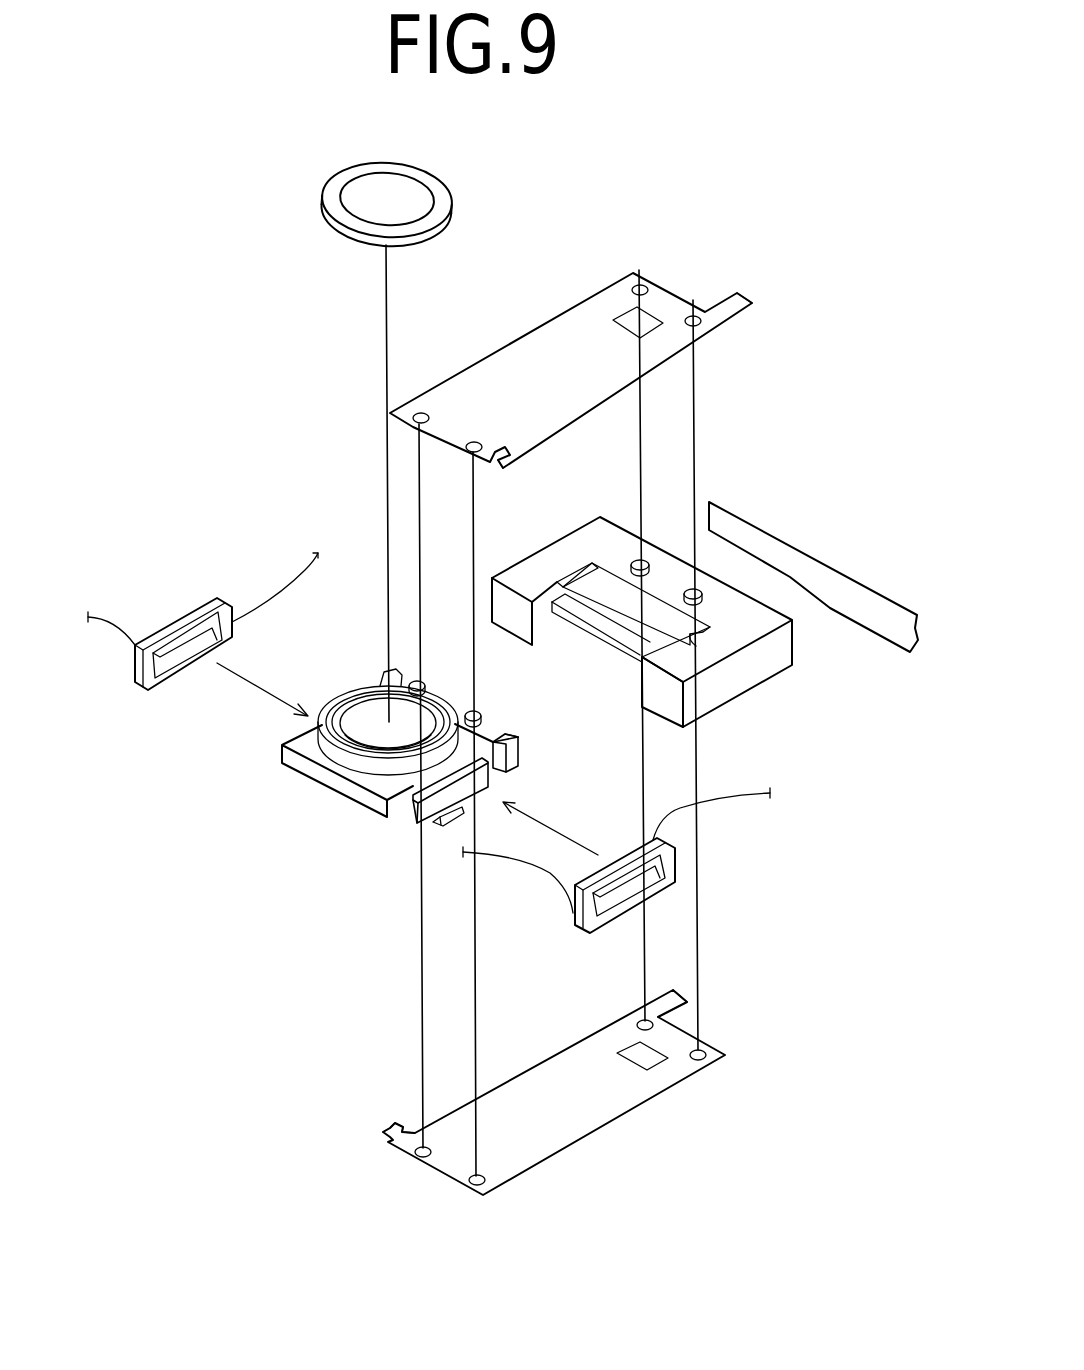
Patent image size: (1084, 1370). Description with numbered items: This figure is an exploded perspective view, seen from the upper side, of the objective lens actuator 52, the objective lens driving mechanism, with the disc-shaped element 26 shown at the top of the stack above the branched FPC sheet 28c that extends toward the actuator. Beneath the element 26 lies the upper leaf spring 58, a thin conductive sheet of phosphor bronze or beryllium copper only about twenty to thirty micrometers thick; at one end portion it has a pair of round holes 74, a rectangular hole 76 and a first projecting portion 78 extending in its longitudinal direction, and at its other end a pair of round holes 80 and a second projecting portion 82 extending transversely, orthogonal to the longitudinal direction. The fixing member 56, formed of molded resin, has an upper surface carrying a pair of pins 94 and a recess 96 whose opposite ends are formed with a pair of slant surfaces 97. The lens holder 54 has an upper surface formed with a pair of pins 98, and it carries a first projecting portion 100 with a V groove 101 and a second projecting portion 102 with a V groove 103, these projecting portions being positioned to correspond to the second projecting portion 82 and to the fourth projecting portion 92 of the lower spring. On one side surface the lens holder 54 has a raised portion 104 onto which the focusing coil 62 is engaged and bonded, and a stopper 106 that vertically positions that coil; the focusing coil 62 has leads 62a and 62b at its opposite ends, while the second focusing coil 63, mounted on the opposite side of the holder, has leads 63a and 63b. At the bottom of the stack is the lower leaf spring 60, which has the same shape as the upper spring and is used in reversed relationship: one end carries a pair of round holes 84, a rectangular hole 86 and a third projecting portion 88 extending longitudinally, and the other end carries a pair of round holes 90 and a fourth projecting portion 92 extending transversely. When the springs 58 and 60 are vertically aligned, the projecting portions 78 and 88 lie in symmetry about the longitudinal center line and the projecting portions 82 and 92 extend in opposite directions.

The lens cover disc 26 is at (438, 188).
The upper leaf spring 58 is at (598, 353).
The round holes 74 is at (692, 318).
The rectangular hole 76 is at (626, 316).
The first projecting portion 78 is at (752, 302).
The round holes 80 is at (474, 444).
The second projecting portion 82 is at (522, 458).
The objective lens actuator 52 is at (756, 503).
The FPC sheet 28c is at (849, 585).
The fixing member 56 is at (667, 602).
The pins 94 is at (692, 590).
The recess 96 is at (585, 590).
The slant surfaces 97 is at (588, 586).
The lens holder 54 is at (429, 734).
The second projecting portion 102 is at (384, 676).
The V groove 103 is at (391, 672).
The pins 98 is at (472, 713).
The first projecting portion 100 is at (513, 756).
The V groove 101 is at (517, 730).
The raised portion 104 is at (487, 777).
The stopper 106 is at (437, 827).
The focusing coil 63 is at (160, 618).
The lead 63a is at (300, 578).
The lead 63b is at (110, 612).
The focusing coil 62 is at (660, 890).
The lead 62a is at (752, 797).
The lead 62b is at (504, 858).
The lower leaf spring 60 is at (562, 1070).
The round holes 84 is at (660, 1018).
The rectangular hole 86 is at (626, 1048).
The third projecting portion 88 is at (673, 988).
The round holes 90 is at (470, 1180).
The fourth projecting portion 92 is at (392, 1127).